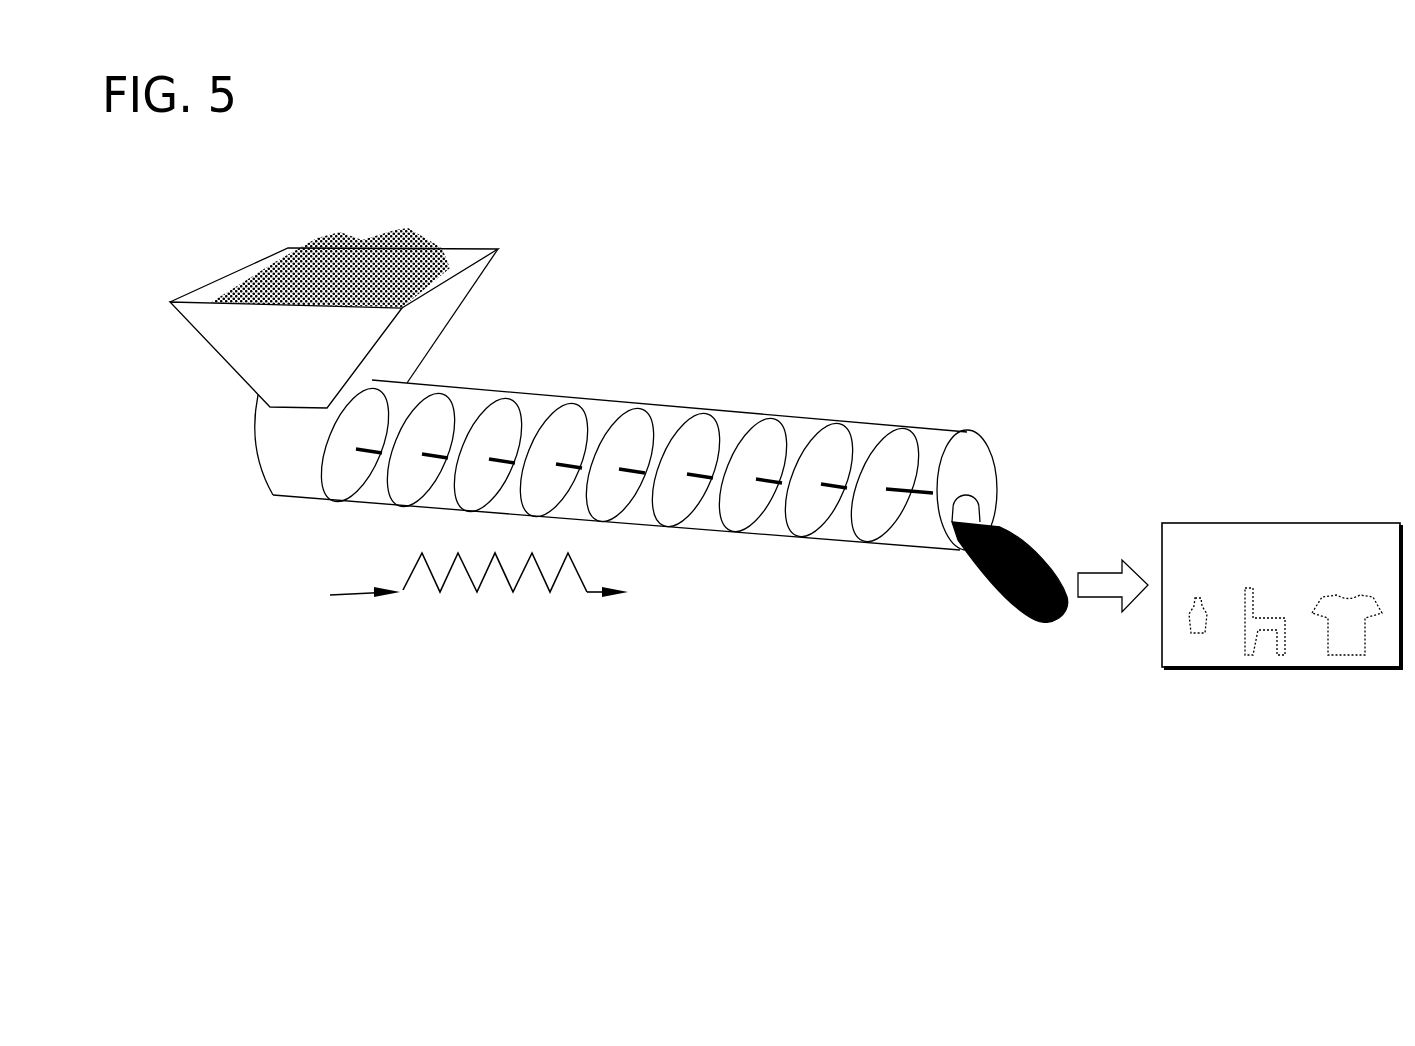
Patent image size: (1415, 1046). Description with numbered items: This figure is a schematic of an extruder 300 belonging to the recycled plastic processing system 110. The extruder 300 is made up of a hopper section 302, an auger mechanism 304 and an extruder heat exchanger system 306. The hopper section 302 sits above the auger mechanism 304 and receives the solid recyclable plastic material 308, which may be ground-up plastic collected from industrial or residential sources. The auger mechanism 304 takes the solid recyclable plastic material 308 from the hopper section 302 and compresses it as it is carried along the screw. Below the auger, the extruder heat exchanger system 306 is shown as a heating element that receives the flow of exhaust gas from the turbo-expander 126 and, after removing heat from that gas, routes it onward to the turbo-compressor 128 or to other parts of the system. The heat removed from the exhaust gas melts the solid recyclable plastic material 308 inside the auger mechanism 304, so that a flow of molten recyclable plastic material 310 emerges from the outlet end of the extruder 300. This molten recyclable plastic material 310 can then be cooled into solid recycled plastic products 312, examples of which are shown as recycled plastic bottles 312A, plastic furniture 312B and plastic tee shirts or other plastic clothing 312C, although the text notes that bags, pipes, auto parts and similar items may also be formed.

The recycled plastic processing system 110 is at (691, 249).
The extruder 300 is at (488, 383).
The hopper section 302 is at (486, 247).
The auger mechanism 304 is at (508, 406).
The extruder heat exchanger system 306 is at (468, 575).
The solid recyclable plastic material 308 is at (372, 240).
The molten recyclable plastic material 310 is at (1015, 533).
The recycled plastic products 312 is at (1293, 523).
The recycled plastic bottles 312A is at (1197, 630).
The plastic furniture 312B is at (1250, 642).
The plastic tee shirts or other plastic clothing 312C is at (1340, 645).
The turbo-expander 126 is at (216, 619).
The turbo-compressor 128 is at (774, 618).